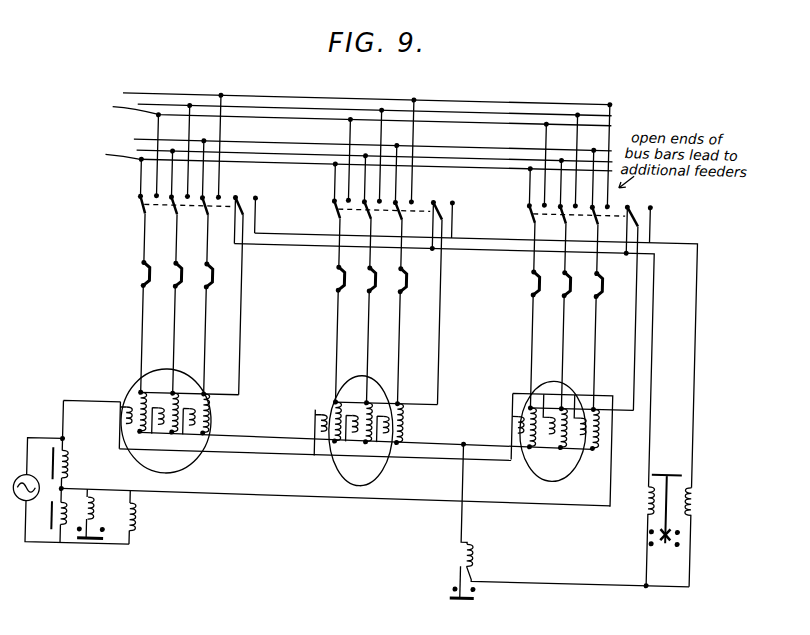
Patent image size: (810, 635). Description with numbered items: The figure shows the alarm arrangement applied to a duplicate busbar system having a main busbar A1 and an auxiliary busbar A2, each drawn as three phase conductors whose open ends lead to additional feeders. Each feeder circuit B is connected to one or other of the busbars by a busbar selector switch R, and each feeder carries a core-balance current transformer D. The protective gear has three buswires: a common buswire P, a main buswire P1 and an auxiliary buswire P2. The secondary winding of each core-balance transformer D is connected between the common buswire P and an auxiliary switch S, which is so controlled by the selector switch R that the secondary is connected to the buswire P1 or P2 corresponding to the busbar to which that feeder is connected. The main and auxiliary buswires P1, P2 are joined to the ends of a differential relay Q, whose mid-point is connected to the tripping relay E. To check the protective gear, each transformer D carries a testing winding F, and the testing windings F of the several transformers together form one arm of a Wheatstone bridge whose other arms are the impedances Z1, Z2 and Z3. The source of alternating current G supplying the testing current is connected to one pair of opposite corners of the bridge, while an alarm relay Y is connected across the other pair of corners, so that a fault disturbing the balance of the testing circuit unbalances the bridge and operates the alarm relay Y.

The main busbar A1 is at (347, 146).
The auxiliary busbar A2 is at (347, 169).
The busbar selector switch R is at (207, 208).
The feeder circuit B is at (212, 333).
The auxiliary switch S is at (242, 200).
The main buswire P1 is at (308, 232).
The auxiliary buswire P2 is at (505, 243).
The common buswire P is at (271, 433).
The testing winding F is at (176, 392).
The core-balance current transformer D is at (194, 446).
The source of alternating current G is at (36, 477).
The impedance Z1 is at (142, 535).
The impedance Z2 is at (74, 532).
The impedance Z3 is at (81, 461).
The alarm relay Y is at (101, 497).
The tripping relay E is at (472, 550).
The differential relay Q is at (676, 462).